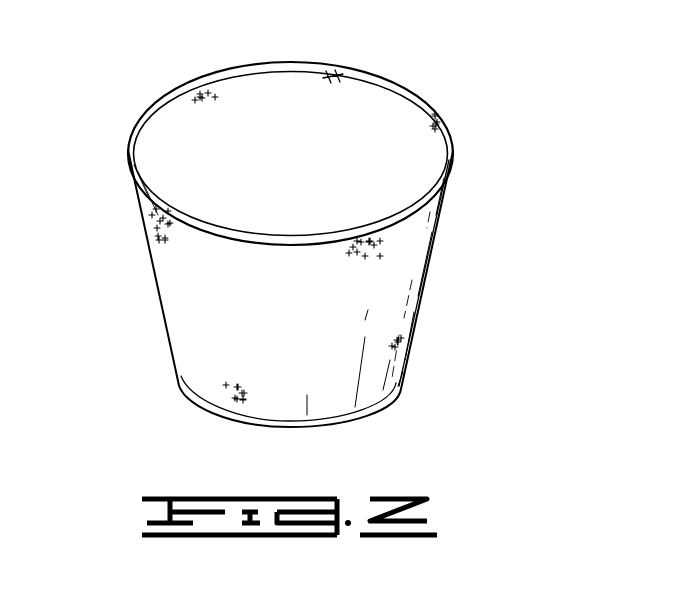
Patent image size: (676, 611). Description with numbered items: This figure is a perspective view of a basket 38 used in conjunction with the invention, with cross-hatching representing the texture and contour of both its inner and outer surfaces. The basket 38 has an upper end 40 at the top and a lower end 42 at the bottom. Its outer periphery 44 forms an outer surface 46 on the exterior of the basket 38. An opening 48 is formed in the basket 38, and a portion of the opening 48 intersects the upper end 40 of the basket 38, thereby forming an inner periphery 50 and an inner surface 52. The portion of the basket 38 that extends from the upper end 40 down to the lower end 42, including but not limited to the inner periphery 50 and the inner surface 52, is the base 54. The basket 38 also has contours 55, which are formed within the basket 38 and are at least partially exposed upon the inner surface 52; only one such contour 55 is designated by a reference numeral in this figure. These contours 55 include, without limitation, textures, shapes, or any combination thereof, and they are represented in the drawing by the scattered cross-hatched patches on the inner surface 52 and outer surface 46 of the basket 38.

The basket 38 is at (313, 223).
The upper end 40 is at (159, 97).
The lower end 42 is at (362, 415).
The outer periphery 44 is at (425, 276).
The outer surface 46 is at (184, 283).
The opening 48 is at (392, 110).
The inner periphery 50 is at (373, 100).
The inner surface 52 is at (278, 88).
The base 54 is at (182, 333).
The contours 55 is at (206, 92).